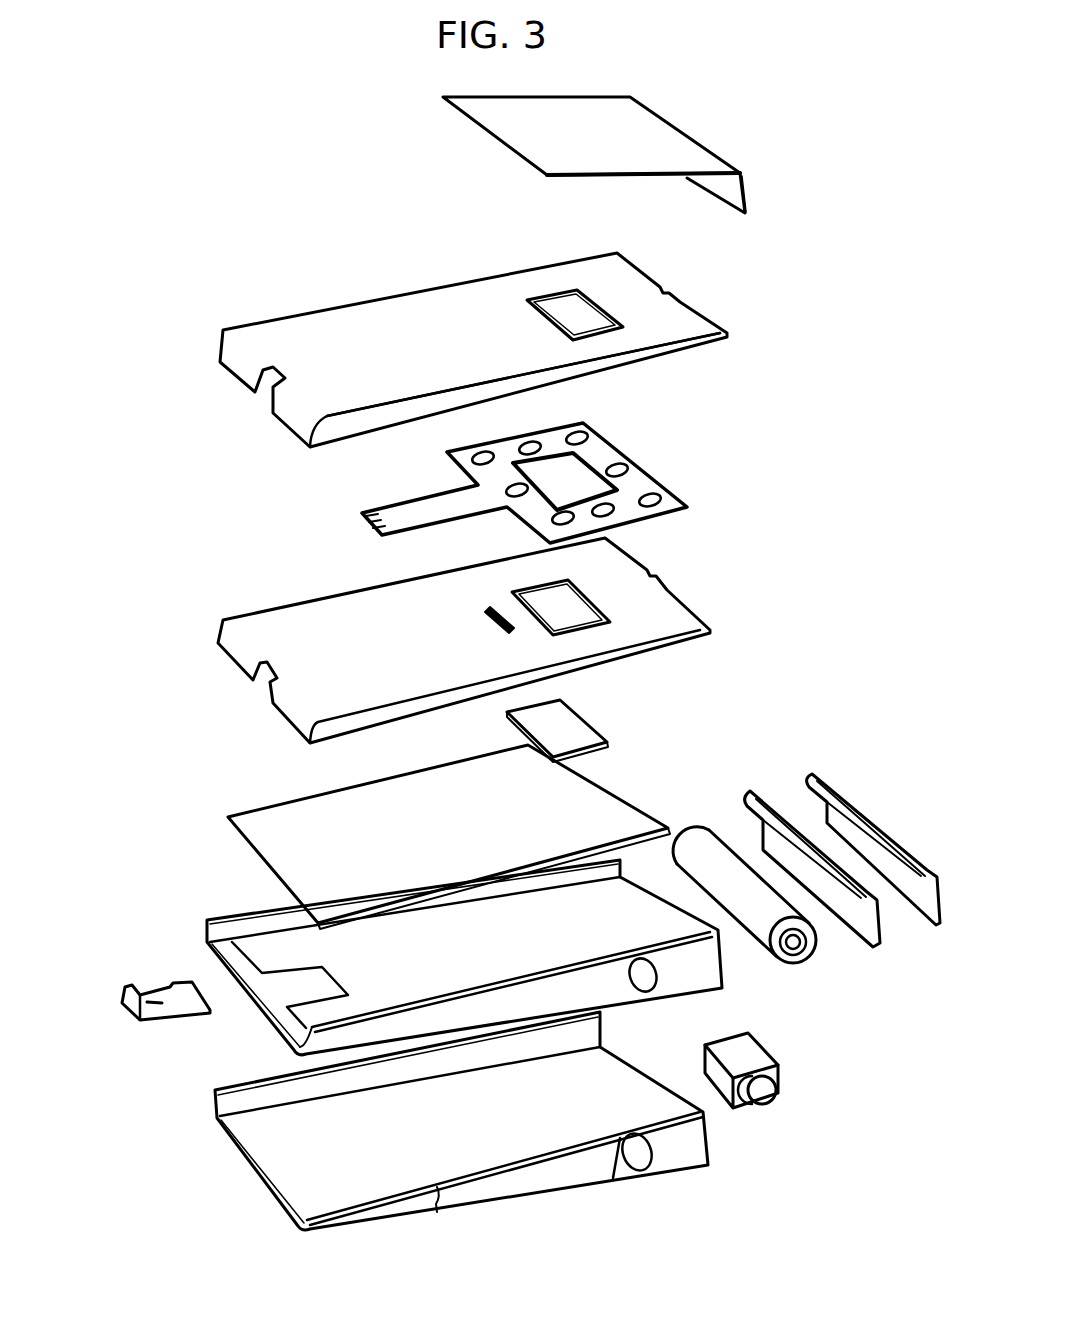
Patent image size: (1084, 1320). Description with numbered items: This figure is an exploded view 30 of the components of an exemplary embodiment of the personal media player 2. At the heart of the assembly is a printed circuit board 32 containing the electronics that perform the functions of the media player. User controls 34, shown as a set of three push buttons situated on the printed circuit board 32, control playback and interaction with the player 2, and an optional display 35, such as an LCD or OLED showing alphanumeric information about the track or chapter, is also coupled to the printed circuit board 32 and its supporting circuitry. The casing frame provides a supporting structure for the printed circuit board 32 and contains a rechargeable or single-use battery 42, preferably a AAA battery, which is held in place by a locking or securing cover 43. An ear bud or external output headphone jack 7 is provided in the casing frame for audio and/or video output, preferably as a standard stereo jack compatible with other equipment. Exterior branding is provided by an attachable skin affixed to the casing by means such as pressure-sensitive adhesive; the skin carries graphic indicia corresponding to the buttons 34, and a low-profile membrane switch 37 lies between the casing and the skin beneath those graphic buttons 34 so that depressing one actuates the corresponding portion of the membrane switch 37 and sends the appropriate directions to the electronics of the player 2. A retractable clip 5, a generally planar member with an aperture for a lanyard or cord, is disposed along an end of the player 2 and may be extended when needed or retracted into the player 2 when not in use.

The player 2 is at (206, 284).
The retractable clip 5 is at (123, 1002).
The headphone jack 7 is at (780, 1079).
The exploded view 30 is at (799, 105).
The printed circuit board 32 is at (633, 790).
The user controls 34 is at (647, 352).
The display 35 is at (590, 720).
The membrane switch 37 is at (673, 490).
The battery 42 is at (803, 958).
The securing cover 43 is at (882, 933).